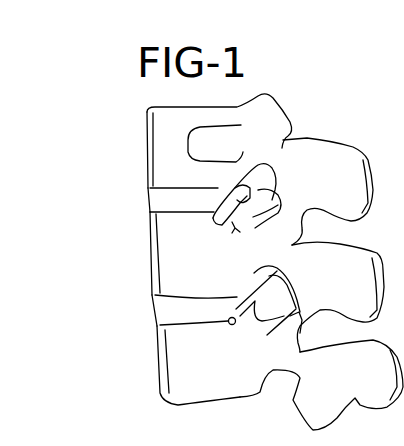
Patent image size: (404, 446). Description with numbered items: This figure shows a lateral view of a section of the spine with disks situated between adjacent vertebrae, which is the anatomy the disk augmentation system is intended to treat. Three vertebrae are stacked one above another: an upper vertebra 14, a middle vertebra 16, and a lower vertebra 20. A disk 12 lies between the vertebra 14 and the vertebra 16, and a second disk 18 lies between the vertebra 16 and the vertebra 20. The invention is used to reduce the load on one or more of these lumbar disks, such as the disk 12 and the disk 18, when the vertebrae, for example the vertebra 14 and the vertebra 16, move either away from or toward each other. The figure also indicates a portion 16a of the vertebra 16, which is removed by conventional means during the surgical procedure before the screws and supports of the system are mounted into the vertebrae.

The vertebra 14 is at (163, 138).
The disk 12 is at (153, 197).
The vertebra 16 is at (165, 243).
The portion of vertebra 16a is at (353, 295).
The disk 18 is at (168, 307).
The vertebra 20 is at (187, 375).